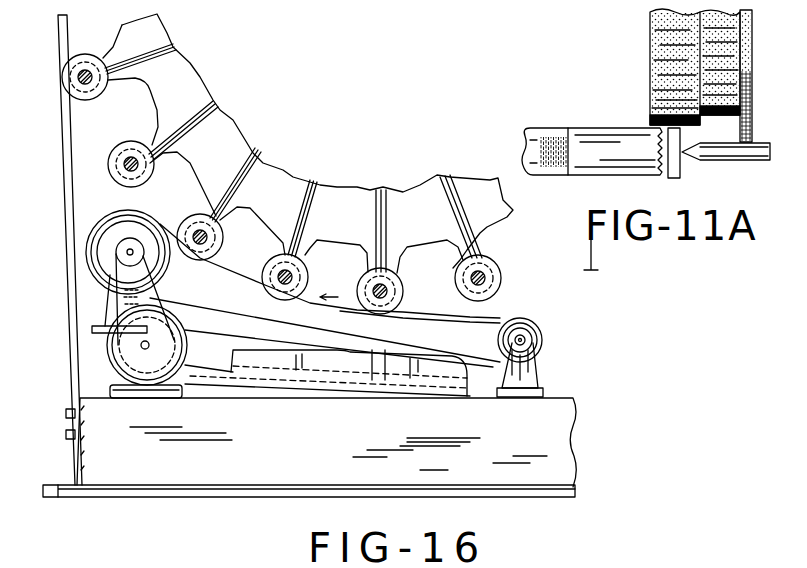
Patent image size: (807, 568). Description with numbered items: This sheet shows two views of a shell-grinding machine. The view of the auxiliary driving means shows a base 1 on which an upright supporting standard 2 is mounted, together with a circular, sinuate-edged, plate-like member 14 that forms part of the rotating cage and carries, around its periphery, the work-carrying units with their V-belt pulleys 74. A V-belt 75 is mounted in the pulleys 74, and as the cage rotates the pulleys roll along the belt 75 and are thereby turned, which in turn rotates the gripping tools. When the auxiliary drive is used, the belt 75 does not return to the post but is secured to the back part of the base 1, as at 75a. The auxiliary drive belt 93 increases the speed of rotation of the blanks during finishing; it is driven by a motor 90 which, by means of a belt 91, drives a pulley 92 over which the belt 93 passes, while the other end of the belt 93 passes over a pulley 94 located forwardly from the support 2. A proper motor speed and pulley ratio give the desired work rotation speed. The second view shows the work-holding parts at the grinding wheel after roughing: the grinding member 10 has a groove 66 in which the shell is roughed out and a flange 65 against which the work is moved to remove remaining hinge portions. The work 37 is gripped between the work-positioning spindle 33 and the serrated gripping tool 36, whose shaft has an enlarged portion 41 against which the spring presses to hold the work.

In FIG. 16, the base 1 is at (100, 490).
In FIG. 16, the upright supporting standard 2 is at (313, 367).
In FIG. 16, the circular sinuate-edged plate-like member 14 is at (497, 210).
In FIG. 16, the V-belt pulley 74 is at (107, 94).
In FIG. 16, the V-belt 75 is at (65, 110).
In FIG. 16, the securing point of the belt 75a is at (66, 434).
In FIG. 16, the motor 90 is at (110, 355).
In FIG. 16, the belt 91 is at (162, 292).
In FIG. 16, the pulley 92 is at (103, 254).
In FIG. 16, the auxiliary drive belt 93 is at (223, 317).
In FIG. 16, the pulley 94 is at (498, 336).
In FIG. 11A, the grinding member 10 is at (657, 32).
In FIG. 11A, the work-positioning spindle 33 is at (757, 158).
In FIG. 11A, the gripping tool 36 is at (595, 128).
In FIG. 11A, the work 37 is at (675, 165).
In FIG. 11A, the enlarged portion of the shaft 41 is at (533, 128).
In FIG. 11A, the flange 65 is at (745, 32).
In FIG. 11A, the groove 66 is at (727, 52).